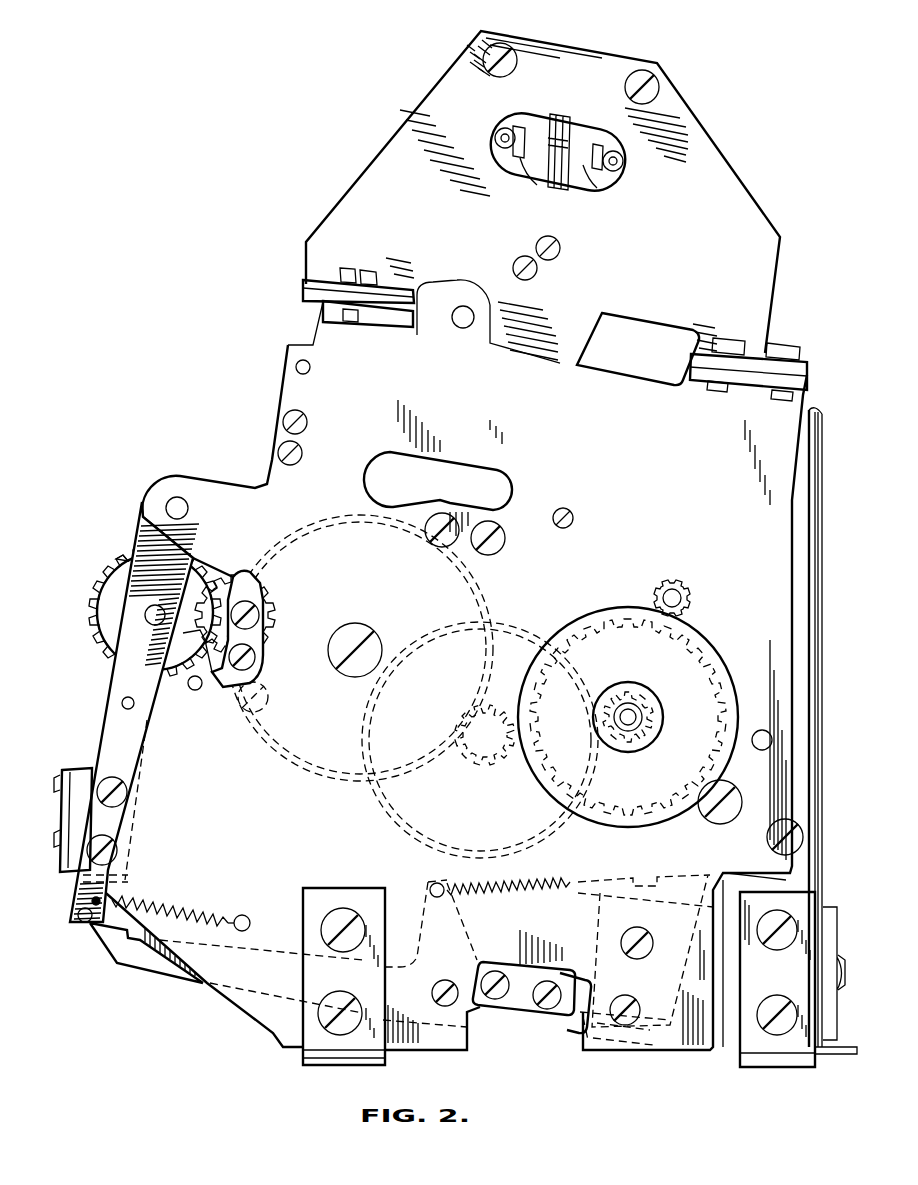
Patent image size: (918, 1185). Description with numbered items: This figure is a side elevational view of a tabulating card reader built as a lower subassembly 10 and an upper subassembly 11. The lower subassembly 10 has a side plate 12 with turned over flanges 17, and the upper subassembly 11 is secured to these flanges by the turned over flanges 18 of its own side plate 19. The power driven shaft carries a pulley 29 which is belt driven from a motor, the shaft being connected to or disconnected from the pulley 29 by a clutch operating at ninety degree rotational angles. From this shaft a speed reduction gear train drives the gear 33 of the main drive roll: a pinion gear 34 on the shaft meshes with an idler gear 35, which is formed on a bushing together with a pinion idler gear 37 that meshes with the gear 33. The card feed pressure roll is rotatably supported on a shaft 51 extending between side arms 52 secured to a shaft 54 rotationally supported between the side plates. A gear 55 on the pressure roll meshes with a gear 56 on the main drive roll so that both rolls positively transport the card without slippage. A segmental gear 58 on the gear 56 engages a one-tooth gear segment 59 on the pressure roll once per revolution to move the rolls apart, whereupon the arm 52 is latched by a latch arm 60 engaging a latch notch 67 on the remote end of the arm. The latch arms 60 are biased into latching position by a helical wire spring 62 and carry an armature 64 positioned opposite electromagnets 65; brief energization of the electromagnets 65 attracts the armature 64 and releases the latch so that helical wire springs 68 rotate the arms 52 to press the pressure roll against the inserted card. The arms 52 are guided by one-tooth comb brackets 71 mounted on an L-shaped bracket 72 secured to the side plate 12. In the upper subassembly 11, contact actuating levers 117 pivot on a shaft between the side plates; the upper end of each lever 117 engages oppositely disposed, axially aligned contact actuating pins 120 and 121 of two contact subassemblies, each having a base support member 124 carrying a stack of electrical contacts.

The lower subassembly 10 is at (262, 398).
The upper subassembly 11 is at (378, 120).
The side plate 12 is at (262, 1030).
The turned over flanges 17 is at (384, 318).
The turned over flanges 18 is at (386, 282).
The side plate 19 is at (722, 186).
The pulley 29 is at (612, 605).
The gear 33 is at (290, 765).
The pinion gear 34 is at (646, 752).
The idler gear 35 is at (568, 835).
The pinion idler gear 37 is at (462, 768).
The shaft 51 is at (160, 606).
The side arm 52 is at (120, 689).
The shaft 54 is at (176, 496).
The gear 55 is at (98, 585).
The gear 56 is at (246, 585).
The segmental gear 58 is at (242, 705).
The one-tooth gear segments 59 is at (122, 556).
The latch arms 60 is at (122, 962).
The helical wire spring 62 is at (532, 893).
The armature 64 is at (652, 1042).
The electromagnets 65 is at (612, 911).
The latch notches 67 is at (82, 924).
The helical wire springs 68 is at (174, 905).
The one-tooth comb brackets 71 is at (60, 790).
The L-shaped bracket 72 is at (82, 830).
The contact actuating levers 117 is at (546, 184).
The contact actuating pin 120 is at (622, 136).
The contact actuating pin 121 is at (518, 126).
The base support member 124 is at (572, 122).